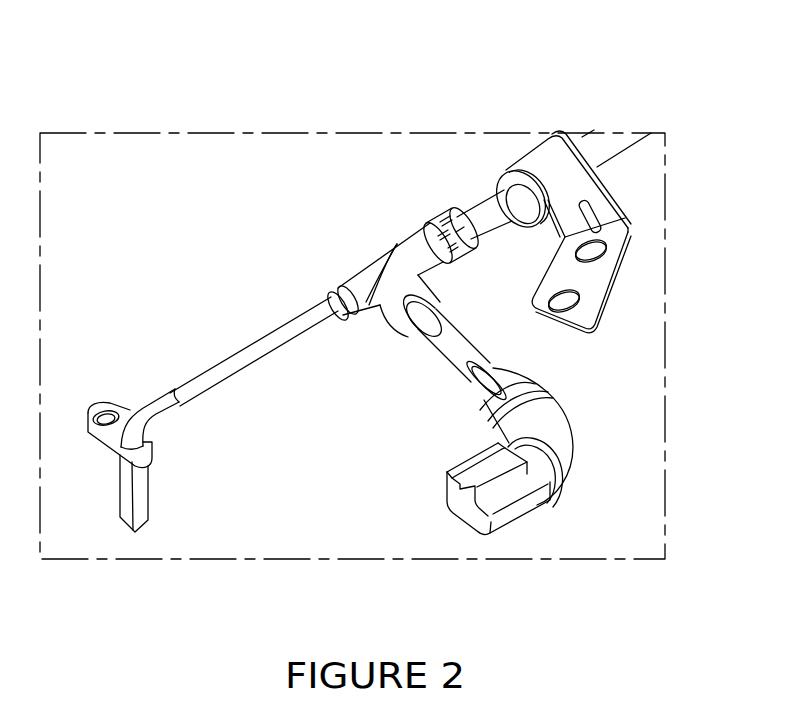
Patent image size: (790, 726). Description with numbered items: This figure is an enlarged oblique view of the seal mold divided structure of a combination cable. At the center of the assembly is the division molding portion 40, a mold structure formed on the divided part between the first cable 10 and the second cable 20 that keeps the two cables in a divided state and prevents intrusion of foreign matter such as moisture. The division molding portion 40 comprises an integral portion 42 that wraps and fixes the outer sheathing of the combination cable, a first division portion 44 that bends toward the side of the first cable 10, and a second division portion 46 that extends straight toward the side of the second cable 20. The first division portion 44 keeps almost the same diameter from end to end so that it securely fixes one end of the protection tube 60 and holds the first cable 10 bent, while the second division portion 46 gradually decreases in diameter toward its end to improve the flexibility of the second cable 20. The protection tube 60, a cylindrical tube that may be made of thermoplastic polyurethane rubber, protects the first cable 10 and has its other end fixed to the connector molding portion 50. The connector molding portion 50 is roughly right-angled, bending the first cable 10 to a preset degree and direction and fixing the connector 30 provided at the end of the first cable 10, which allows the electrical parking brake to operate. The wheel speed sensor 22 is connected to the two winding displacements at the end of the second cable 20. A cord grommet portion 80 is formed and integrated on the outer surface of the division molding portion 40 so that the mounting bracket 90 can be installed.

The first cable 10 is at (433, 370).
The second cable 20 is at (231, 349).
The wheel speed sensor 22 is at (152, 463).
The connector 30 is at (521, 510).
The division molding portion 40 is at (447, 89).
The integral portion 42 is at (446, 218).
The first division portion 44 is at (406, 304).
The second division portion 46 is at (353, 288).
The connector molding portion 50 is at (562, 427).
The protection tube 60 is at (460, 345).
The cord grommet portion 80 is at (516, 176).
The mounting bracket 90 is at (597, 277).